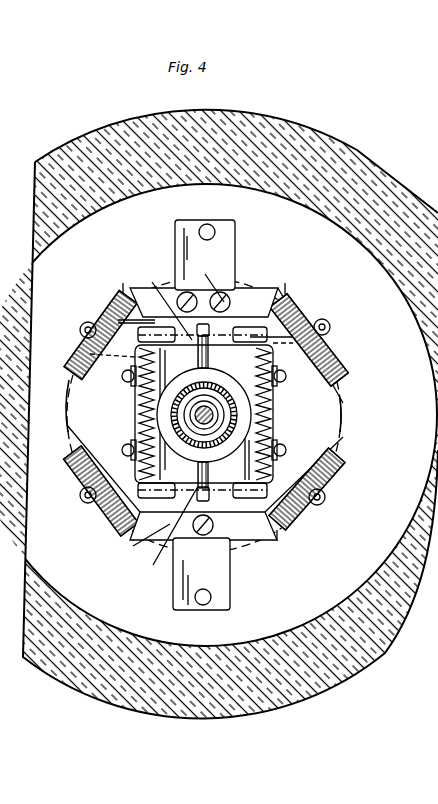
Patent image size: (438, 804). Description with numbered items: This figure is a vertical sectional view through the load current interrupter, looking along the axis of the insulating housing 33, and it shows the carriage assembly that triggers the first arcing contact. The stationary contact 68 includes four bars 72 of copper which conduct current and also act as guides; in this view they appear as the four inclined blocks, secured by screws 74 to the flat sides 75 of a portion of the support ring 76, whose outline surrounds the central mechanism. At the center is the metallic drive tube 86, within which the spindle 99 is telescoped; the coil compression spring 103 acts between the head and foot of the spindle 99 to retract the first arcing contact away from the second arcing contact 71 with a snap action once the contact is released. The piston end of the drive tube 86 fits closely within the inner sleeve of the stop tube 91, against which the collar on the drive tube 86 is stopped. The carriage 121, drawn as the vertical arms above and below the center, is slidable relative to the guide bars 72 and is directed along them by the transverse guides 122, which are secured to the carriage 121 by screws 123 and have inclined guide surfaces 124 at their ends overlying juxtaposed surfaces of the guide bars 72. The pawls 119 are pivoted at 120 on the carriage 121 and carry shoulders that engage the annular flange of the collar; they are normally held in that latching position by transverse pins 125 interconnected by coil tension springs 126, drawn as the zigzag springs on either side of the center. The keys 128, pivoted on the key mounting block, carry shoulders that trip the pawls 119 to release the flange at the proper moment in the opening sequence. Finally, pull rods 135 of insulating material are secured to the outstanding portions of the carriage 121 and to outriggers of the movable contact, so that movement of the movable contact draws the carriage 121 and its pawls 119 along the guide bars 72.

The insulating housing 33 is at (85, 150).
The stationary contact 68 is at (110, 258).
The second arcing contact 71 is at (331, 326).
The bars 72 is at (108, 306).
The screws 74 is at (80, 330).
The flat sides 75 is at (67, 405).
The support ring 76 is at (343, 405).
The metallic drive tube 86 is at (190, 434).
The stop tube 91 is at (213, 400).
The spindle 99 is at (190, 393).
The coil compression spring 103 is at (213, 392).
The pawls 119 is at (135, 385).
The pivots 120 is at (122, 376).
The carriage 121 is at (228, 238).
The transverse guides 122 is at (250, 290).
The screws 123 is at (173, 426).
The inclined guide surfaces 124 is at (122, 290).
The transverse pins 125 is at (250, 515).
The coil tension springs 126 is at (89, 354).
The keys 128 is at (155, 419).
The pull rods 135 is at (207, 225).